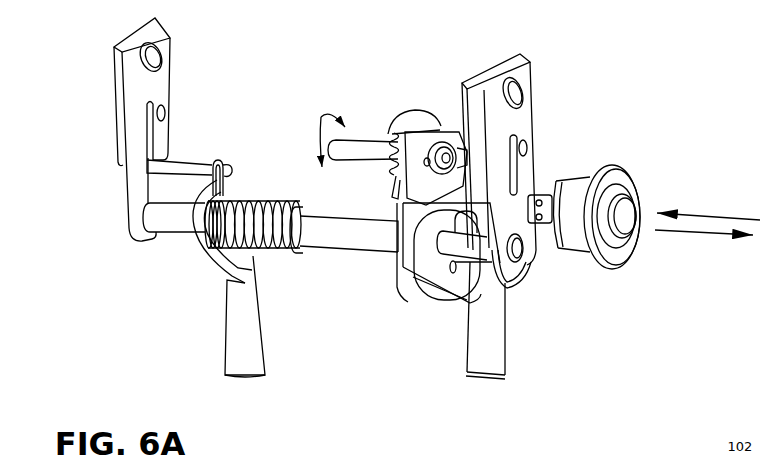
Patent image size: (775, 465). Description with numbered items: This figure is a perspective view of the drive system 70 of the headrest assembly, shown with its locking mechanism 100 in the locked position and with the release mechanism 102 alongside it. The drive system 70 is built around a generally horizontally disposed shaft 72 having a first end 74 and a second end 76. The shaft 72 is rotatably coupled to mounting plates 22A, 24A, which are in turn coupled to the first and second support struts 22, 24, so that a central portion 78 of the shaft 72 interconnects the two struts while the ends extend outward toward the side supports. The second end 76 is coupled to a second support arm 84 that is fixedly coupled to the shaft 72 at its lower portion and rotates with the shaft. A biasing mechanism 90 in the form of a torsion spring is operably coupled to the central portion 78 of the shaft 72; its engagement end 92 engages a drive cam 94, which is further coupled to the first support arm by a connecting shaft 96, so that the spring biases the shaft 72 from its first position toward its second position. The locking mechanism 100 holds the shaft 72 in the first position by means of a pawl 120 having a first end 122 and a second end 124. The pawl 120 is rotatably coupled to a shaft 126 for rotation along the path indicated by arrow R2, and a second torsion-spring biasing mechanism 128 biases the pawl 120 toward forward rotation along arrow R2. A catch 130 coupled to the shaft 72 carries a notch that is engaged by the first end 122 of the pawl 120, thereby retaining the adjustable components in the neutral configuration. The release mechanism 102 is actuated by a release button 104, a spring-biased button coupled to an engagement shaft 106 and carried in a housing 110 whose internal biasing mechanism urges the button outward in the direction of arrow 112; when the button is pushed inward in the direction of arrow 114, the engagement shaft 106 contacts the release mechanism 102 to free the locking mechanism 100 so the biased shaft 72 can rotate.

The first support strut 22 is at (237, 333).
The mounting plate 22A is at (217, 248).
The second support strut 24 is at (492, 337).
The mounting plate 24A is at (470, 262).
The drive system 70 is at (318, 205).
The shaft 72 is at (315, 250).
The first end 74 is at (150, 218).
The second end 76 is at (530, 262).
The central portion 78 is at (332, 247).
The second support arm 84 is at (120, 120).
The biasing mechanism 90 is at (273, 190).
The engagement end 92 is at (244, 186).
The drive cam 94 is at (207, 172).
The connecting shaft 96 is at (180, 165).
The locking mechanism 100 is at (380, 210).
The release mechanism 102 is at (404, 213).
The release button 104 is at (650, 187).
The engagement shaft 106 is at (542, 195).
The housing 110 is at (567, 240).
The arrow 112 is at (687, 231).
The arrow 114 is at (698, 215).
The pawl 120 is at (428, 133).
The first end 122 is at (397, 205).
The second end 124 is at (464, 85).
The shaft 126 is at (363, 140).
The biasing mechanism 128 is at (388, 168).
The catch 130 is at (408, 262).
The arrow R2 is at (321, 117).